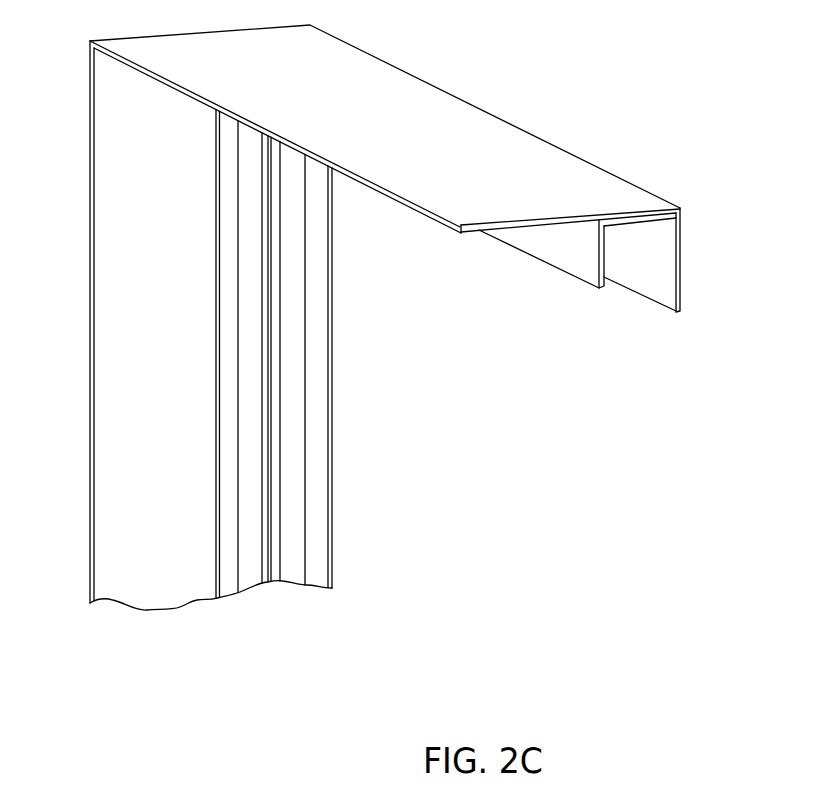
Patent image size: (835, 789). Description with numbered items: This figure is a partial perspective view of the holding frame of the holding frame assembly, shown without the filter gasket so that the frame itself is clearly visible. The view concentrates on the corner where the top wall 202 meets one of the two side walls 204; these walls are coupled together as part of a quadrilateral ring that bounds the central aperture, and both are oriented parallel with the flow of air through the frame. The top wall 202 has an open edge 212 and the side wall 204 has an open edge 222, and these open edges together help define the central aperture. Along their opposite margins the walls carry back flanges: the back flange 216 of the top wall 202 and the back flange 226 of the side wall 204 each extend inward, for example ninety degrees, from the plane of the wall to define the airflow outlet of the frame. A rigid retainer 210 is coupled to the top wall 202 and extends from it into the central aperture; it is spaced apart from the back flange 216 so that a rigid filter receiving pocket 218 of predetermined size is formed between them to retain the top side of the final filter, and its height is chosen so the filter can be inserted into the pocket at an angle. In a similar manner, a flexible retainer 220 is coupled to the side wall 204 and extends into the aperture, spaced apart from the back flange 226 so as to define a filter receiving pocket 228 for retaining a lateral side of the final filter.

The top wall 202 is at (438, 120).
The side wall 204 is at (165, 562).
The rigid retainer 210 is at (562, 248).
The open edge 212 is at (388, 192).
The back flange 216 is at (680, 250).
The rigid filter receiving pocket 218 is at (636, 267).
The flexible retainer 220 is at (270, 454).
The open edge 222 is at (90, 438).
The back flange 226 is at (333, 363).
The filter receiving pocket 228 is at (292, 511).